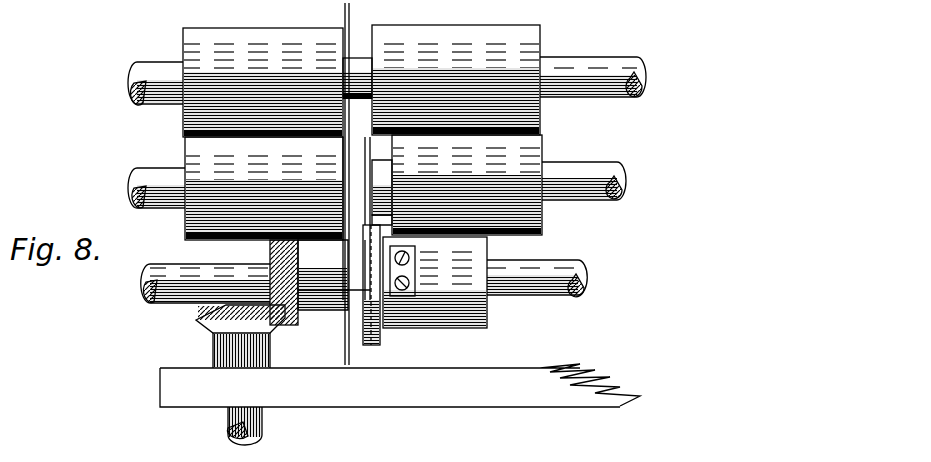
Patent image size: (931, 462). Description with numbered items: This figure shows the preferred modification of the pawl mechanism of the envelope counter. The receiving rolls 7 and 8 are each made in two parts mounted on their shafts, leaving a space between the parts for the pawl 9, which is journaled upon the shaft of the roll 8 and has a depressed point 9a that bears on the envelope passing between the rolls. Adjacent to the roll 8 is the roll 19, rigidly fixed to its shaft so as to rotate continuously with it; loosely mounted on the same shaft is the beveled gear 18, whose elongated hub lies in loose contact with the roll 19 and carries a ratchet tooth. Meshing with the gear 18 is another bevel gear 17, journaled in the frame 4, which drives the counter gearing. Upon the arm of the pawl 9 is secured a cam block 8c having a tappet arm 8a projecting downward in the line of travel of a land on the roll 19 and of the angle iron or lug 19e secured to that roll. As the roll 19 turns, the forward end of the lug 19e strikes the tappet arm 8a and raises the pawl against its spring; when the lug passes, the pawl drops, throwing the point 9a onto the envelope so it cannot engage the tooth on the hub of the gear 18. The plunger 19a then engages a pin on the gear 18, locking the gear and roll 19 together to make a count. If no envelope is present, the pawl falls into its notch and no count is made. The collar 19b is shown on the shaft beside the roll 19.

The frame 4 is at (400, 385).
The receiving roll 7 is at (387, 81).
The receiving roll 8 is at (377, 187).
The tappet arm 8a is at (382, 218).
The cam block 8c is at (372, 192).
The pawl 9 is at (344, 28).
The point of pawl 9a is at (356, 218).
The bevel gear 17 is at (228, 346).
The beveled gear 18 is at (312, 313).
The roll 19 is at (425, 328).
The plunger 19a is at (368, 290).
The collar 19b is at (378, 340).
The angle iron or lug 19e is at (418, 266).